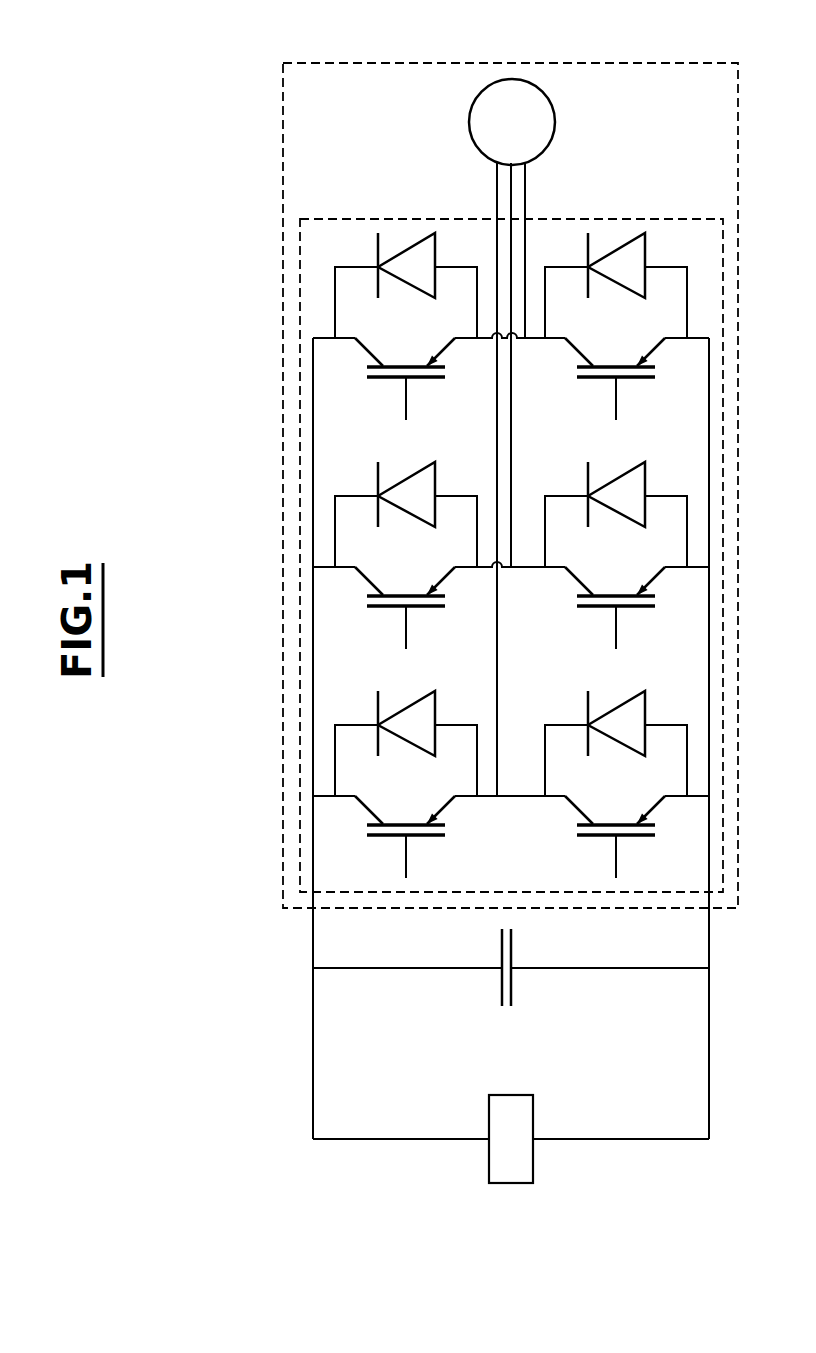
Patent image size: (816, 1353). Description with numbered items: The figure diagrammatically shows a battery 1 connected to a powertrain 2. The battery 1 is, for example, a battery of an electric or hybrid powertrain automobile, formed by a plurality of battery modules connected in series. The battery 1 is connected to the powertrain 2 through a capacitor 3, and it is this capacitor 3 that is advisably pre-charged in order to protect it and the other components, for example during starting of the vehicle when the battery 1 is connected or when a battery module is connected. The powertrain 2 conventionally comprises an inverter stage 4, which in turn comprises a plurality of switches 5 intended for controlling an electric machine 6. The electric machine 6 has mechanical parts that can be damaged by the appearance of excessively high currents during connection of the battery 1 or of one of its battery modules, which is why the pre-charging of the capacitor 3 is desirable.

The battery 1 is at (514, 1184).
The powertrain 2 is at (283, 487).
The capacitor 3 is at (501, 993).
The inverter stage 4 is at (299, 548).
The switches 5 is at (511, 555).
The electric machine 6 is at (492, 81).